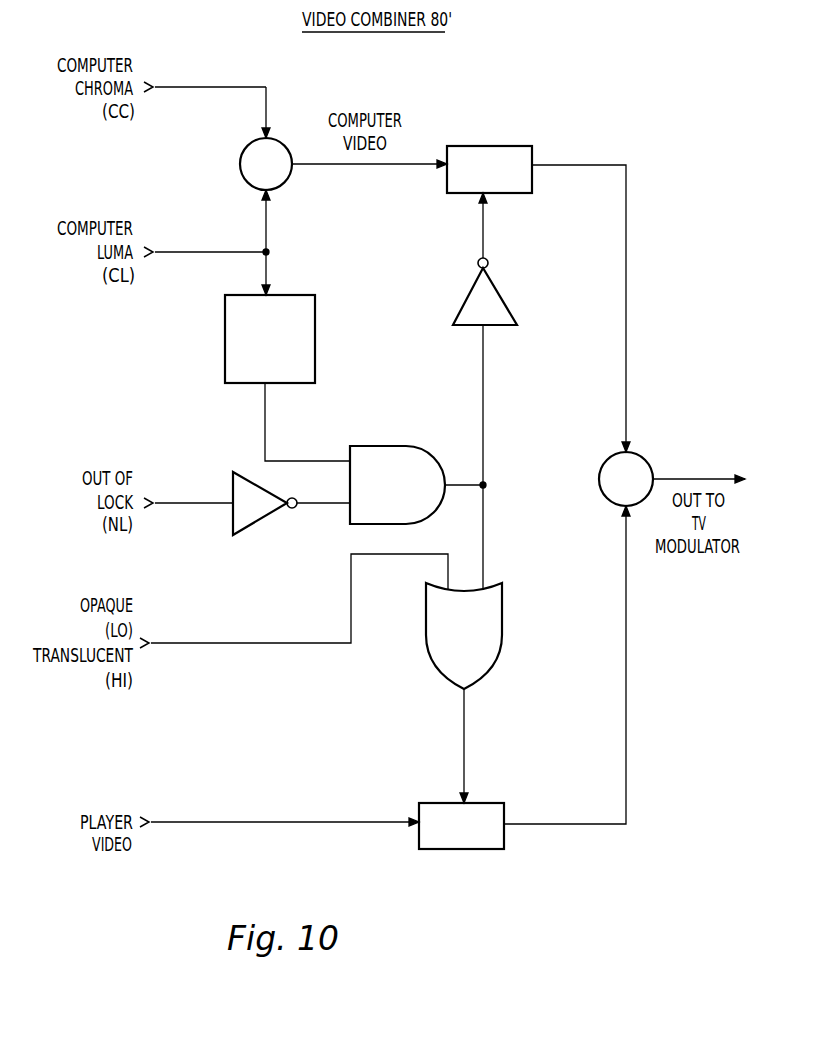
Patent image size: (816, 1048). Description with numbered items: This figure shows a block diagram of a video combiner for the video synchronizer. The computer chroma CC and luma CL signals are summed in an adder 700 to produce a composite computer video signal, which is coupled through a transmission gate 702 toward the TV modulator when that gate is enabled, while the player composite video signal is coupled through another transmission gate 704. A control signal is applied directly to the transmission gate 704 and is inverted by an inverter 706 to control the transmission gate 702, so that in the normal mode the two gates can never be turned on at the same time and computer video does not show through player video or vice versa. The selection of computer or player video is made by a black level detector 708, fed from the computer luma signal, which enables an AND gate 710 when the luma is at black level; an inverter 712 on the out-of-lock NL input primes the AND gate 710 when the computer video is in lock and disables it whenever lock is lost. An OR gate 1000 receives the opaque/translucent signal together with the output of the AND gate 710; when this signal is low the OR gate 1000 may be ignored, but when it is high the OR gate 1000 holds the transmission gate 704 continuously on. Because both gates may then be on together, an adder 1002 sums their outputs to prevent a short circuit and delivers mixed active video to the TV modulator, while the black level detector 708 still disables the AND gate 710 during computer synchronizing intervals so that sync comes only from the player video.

The adder 700 is at (241, 168).
The transmission gate 702 is at (490, 146).
The transmission gate 704 is at (443, 803).
The inverter 706 is at (497, 287).
The black level detector 708 is at (316, 337).
The AND gate 710 is at (397, 446).
The inverter 712 is at (233, 482).
The OR gate 1000 is at (506, 600).
The adder 1002 is at (632, 452).